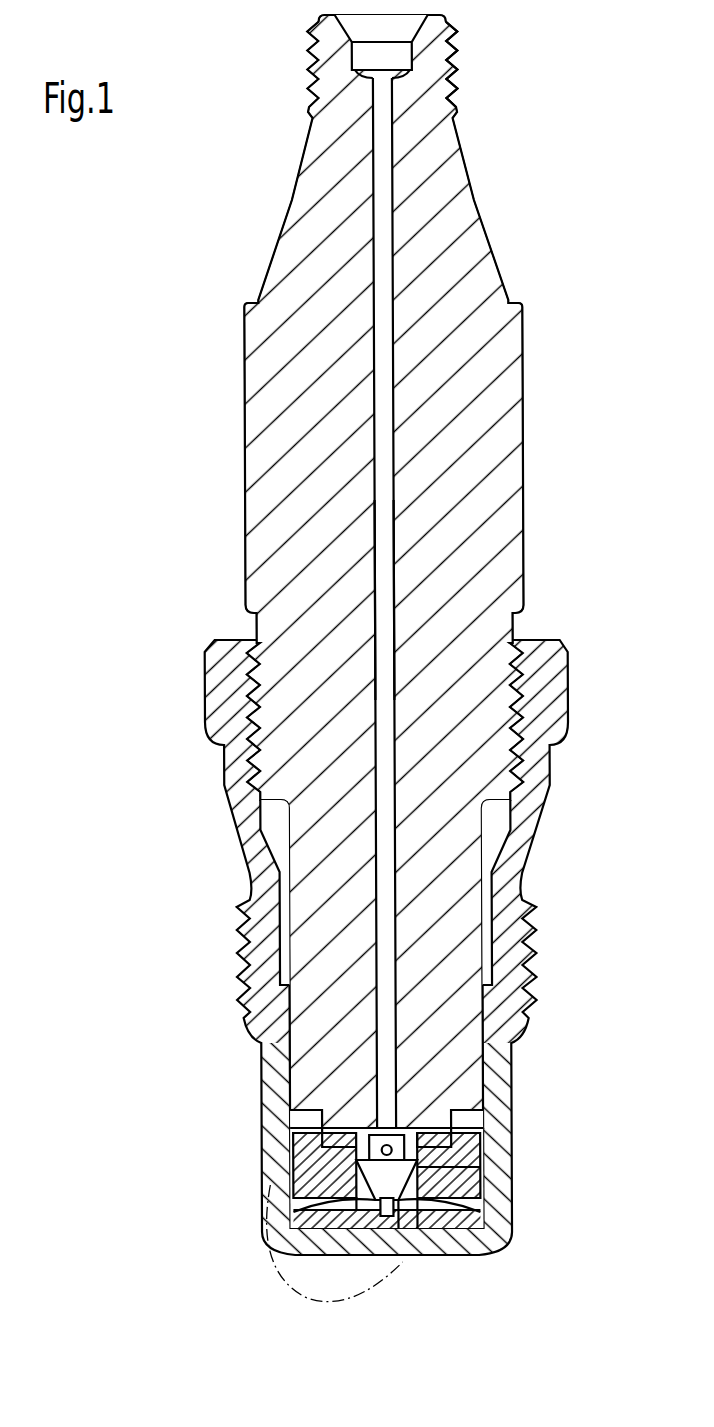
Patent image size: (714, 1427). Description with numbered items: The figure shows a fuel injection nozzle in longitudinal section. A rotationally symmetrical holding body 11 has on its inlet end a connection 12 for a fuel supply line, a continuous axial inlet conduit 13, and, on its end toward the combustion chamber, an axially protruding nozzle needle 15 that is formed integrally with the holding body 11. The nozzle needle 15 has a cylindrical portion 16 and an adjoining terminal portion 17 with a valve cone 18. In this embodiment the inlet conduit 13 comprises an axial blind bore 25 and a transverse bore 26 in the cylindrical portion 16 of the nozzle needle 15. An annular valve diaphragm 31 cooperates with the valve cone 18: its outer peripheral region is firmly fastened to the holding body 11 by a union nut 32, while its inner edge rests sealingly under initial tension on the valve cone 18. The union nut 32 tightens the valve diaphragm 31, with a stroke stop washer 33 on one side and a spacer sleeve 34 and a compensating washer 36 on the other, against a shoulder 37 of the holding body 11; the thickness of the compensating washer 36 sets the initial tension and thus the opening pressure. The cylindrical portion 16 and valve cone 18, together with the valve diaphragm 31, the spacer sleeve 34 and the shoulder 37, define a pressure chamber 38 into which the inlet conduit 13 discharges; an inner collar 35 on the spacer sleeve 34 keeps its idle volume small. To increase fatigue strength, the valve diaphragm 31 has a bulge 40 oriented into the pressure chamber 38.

The holding body 11 is at (458, 488).
The connection 12 is at (457, 67).
The inlet conduit 13 is at (381, 176).
The axial blind bore 25 is at (380, 584).
The union nut 32 is at (525, 847).
The shoulder 37 is at (479, 1095).
The compensating washer 36 is at (500, 1114).
The inner collar 35 is at (479, 1138).
The spacer sleeve 34 is at (479, 1167).
The pressure chamber 38 is at (479, 1192).
The valve diaphragm 31 is at (479, 1222).
The transverse bore 26 is at (362, 1148).
The nozzle needle 15 is at (290, 1145).
The cylindrical portion 16 is at (310, 1177).
The valve cone 18 is at (300, 1202).
The terminal portion 17 is at (372, 1228).
The stroke stop washer 33 is at (404, 1236).
The bulge 40 is at (446, 1226).